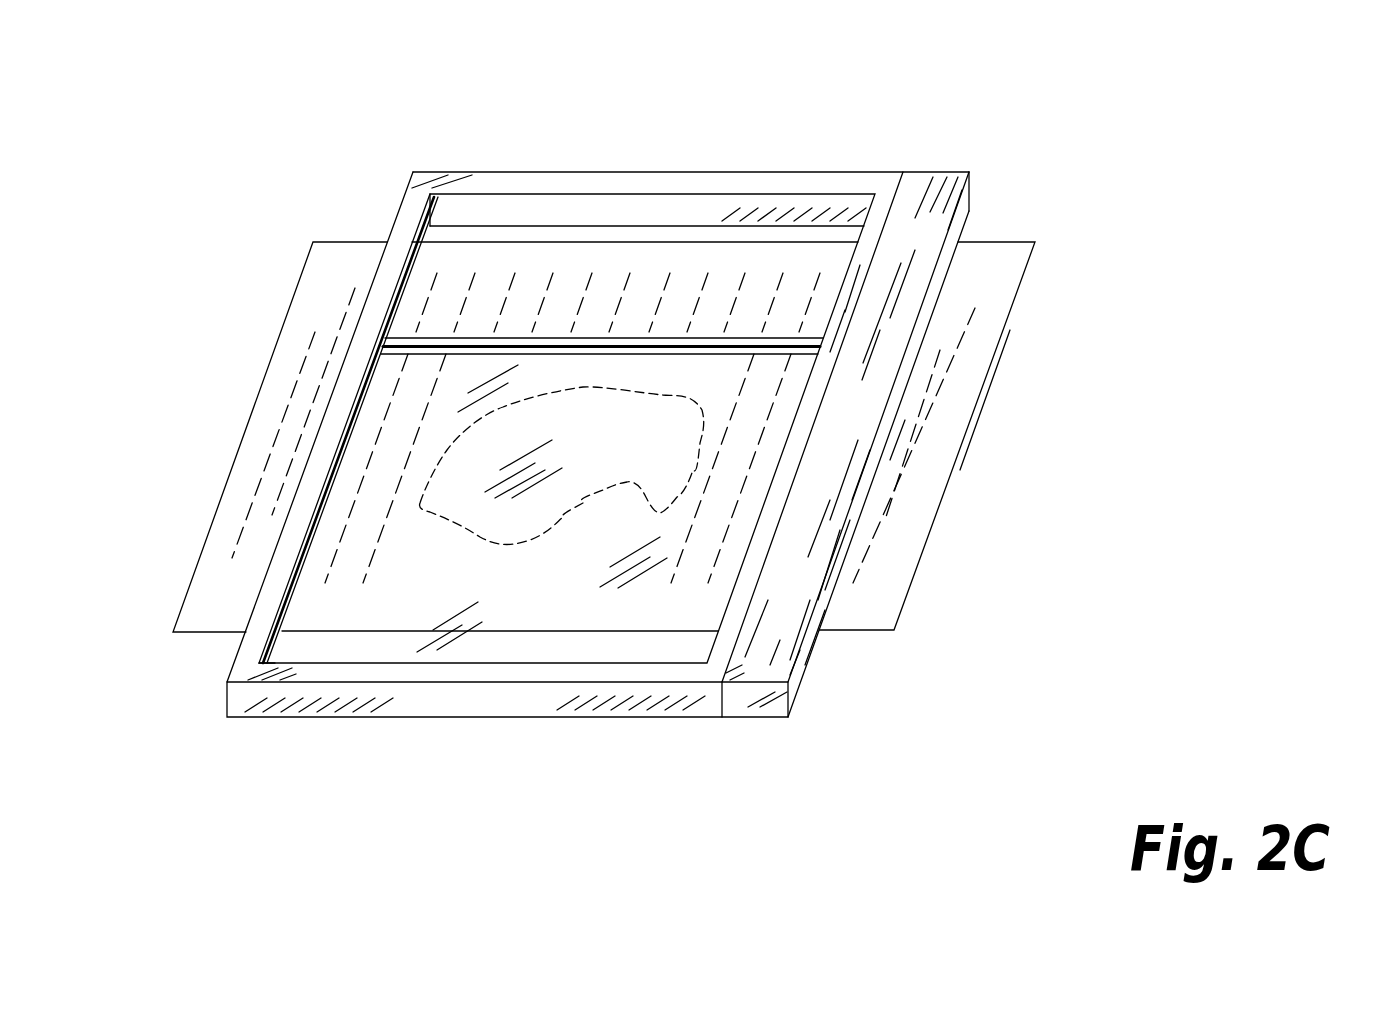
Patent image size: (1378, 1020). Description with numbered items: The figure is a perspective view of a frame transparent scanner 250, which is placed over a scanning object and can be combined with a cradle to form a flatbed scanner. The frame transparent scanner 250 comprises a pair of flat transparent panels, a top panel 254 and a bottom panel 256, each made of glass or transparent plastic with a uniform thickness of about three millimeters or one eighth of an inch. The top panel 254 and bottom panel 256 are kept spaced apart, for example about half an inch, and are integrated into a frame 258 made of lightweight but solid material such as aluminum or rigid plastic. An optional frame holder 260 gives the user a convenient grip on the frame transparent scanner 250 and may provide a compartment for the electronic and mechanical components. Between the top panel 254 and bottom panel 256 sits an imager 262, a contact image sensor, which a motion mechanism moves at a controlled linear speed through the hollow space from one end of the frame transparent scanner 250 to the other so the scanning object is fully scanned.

The frame transparent scanner 250 is at (746, 98).
The top panel 254 is at (297, 648).
The bottom panel 256 is at (540, 712).
The frame 258 is at (475, 185).
The frame holder 260 is at (930, 163).
The imager 262 is at (408, 338).